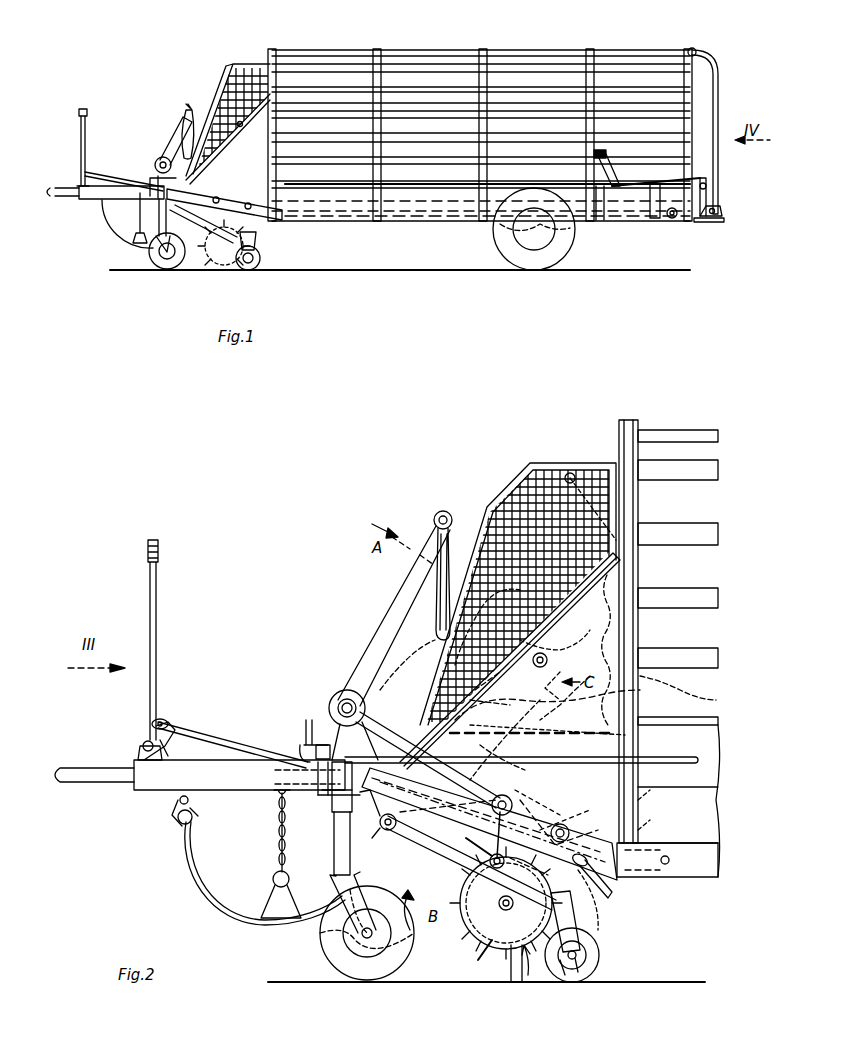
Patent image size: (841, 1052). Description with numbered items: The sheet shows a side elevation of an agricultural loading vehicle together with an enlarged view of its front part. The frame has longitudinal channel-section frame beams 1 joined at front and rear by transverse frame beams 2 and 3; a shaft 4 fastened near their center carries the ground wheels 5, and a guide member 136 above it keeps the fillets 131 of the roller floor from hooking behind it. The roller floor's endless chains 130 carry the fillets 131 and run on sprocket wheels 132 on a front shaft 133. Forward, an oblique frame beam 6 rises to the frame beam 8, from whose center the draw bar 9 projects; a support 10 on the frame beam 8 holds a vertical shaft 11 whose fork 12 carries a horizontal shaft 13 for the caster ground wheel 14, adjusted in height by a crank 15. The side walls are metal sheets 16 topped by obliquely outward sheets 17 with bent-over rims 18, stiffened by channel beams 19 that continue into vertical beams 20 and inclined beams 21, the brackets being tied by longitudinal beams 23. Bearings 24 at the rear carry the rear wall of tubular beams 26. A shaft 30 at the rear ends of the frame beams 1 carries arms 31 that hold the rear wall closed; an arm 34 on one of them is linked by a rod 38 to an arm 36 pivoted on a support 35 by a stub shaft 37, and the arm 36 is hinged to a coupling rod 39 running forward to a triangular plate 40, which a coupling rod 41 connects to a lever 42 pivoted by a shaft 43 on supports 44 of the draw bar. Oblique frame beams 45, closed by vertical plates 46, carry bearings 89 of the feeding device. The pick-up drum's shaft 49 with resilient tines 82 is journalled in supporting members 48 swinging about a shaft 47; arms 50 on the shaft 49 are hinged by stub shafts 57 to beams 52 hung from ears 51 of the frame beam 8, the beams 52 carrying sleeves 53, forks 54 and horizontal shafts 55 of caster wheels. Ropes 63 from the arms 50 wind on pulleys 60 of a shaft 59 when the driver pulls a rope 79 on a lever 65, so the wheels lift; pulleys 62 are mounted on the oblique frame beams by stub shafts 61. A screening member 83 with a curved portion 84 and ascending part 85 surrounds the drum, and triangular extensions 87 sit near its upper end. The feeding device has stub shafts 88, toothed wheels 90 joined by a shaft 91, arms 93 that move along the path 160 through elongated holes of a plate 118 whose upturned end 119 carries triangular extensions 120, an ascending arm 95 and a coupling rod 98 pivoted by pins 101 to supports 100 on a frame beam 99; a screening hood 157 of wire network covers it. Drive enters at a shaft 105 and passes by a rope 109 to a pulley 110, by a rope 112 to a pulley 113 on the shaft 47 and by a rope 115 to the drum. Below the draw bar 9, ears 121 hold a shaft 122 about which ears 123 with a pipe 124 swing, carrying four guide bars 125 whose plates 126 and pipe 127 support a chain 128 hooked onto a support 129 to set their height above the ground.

In FIG. 1, the wagon body 1 is at (362, 222).
In FIG. 2, the wagon body 1 is at (718, 858).
In FIG. 2, the frame member 2 is at (604, 882).
In FIG. 1, the rear frame part 3 is at (712, 224).
In FIG. 1, the axle 4 is at (500, 240).
In FIG. 1, the wagon wheel 5 is at (536, 270).
In FIG. 1, the frame beam 6 is at (266, 222).
In FIG. 2, the frame beam 6 is at (620, 880).
In FIG. 2, the frame bar 8 is at (398, 778).
In FIG. 1, the drawbar 9 is at (122, 200).
In FIG. 2, the drawbar 9 is at (200, 770).
In FIG. 2, the support strut 10 is at (330, 846).
In FIG. 2, the wheel fork 11 is at (334, 870).
In FIG. 2, the wheel axle 12 is at (320, 946).
In FIG. 2, the wheel rim 13 is at (330, 965).
In FIG. 1, the support wheel 14 is at (262, 258).
In FIG. 2, the support wheel 14 is at (368, 980).
In FIG. 2, the coupling 15 is at (300, 722).
In FIG. 2, the side wall 16 is at (700, 812).
In FIG. 2, the side wall member 17 is at (705, 768).
In FIG. 2, the loading floor 18 is at (710, 722).
In FIG. 2, the longitudinal beam 19 is at (640, 746).
In FIG. 2, the front wall post 20 is at (630, 622).
In FIG. 2, the front post 21 is at (618, 432).
In FIG. 2, the side slats 23 is at (706, 465).
In FIG. 1, the rear door pivot 24 is at (695, 47).
In FIG. 1, the rear door frame 26 is at (719, 112).
In FIG. 1, the rear pivot 30 is at (682, 224).
In FIG. 1, the rear latch 31 is at (722, 206).
In FIG. 1, the rear link 34 is at (716, 190).
In FIG. 1, the bracket 35 is at (594, 156).
In FIG. 1, the rear support 36 is at (604, 222).
In FIG. 1, the link 37 is at (609, 160).
In FIG. 1, the rear arm 38 is at (650, 222).
In FIG. 1, the control rod 39 is at (324, 184).
In FIG. 2, the control rod 39 is at (648, 766).
In FIG. 2, the clamp 40 is at (326, 822).
In FIG. 1, the connecting rod 41 is at (130, 178).
In FIG. 2, the connecting rod 41 is at (240, 738).
In FIG. 1, the hand lever 42 is at (82, 150).
In FIG. 2, the hand lever 42 is at (158, 695).
In FIG. 2, the lever pivot 43 is at (142, 742).
In FIG. 2, the lever bracket 44 is at (140, 750).
In FIG. 1, the brace 45 is at (238, 135).
In FIG. 2, the front wall 46 is at (638, 638).
In FIG. 2, the pivot 47 is at (588, 868).
In FIG. 2, the pivot arm 48 is at (592, 896).
In FIG. 2, the pick-up shaft 49 is at (509, 912).
In FIG. 2, the pick-up drum 50 is at (492, 900).
In FIG. 2, the pivot pin 51 is at (374, 830).
In FIG. 2, the pick-up arm 52 is at (414, 855).
In FIG. 2, the gauge wheel fork 53 is at (592, 952).
In FIG. 2, the gauge wheel 54 is at (582, 982).
In FIG. 2, the gauge wheel axle 55 is at (562, 982).
In FIG. 2, the link 57 is at (488, 856).
In FIG. 2, the pivot 59 is at (352, 690).
In FIG. 2, the pivot bearing 60 is at (336, 708).
In FIG. 2, the pivot pin 61 is at (508, 796).
In FIG. 2, the link 62 is at (492, 803).
In FIG. 2, the strut 63 is at (376, 718).
In FIG. 1, the chain link 65 is at (184, 122).
In FIG. 2, the chain link 65 is at (418, 574).
In FIG. 2, the arm 79 is at (396, 630).
In FIG. 2, the guide 82 is at (510, 975).
In FIG. 2, the guide member 83 is at (520, 982).
In FIG. 2, the stripper 84 is at (478, 945).
In FIG. 2, the arm 85 is at (598, 932).
In FIG. 2, the wall portion 87 is at (638, 808).
In FIG. 2, the conveyor element 88 is at (558, 686).
In FIG. 2, the pivot 89 is at (546, 656).
In FIG. 2, the lower slat 90 is at (678, 658).
In FIG. 2, the guide rail 91 is at (556, 624).
In FIG. 2, the conveyor 93 is at (538, 694).
In FIG. 2, the net frame 95 is at (500, 484).
In FIG. 2, the net 98 is at (575, 470).
In FIG. 2, the wall member 99 is at (634, 600).
In FIG. 2, the wall member 100 is at (630, 576).
In FIG. 2, the wall member 101 is at (628, 560).
In FIG. 2, the drawbar coupling 105 is at (270, 776).
In FIG. 2, the arm portion 109 is at (420, 655).
In FIG. 2, the arm portion 110 is at (436, 632).
In FIG. 2, the conveyor path 112 is at (530, 742).
In FIG. 2, the link 113 is at (572, 798).
In FIG. 2, the link 115 is at (560, 862).
In FIG. 2, the conveyor path 118 is at (608, 748).
In FIG. 2, the conveyor path 119 is at (590, 720).
In FIG. 2, the guide 120 is at (660, 680).
In FIG. 2, the pivot 121 is at (172, 806).
In FIG. 2, the bracket 122 is at (176, 824).
In FIG. 2, the pivot pin 123 is at (192, 810).
In FIG. 2, the lug 124 is at (191, 827).
In FIG. 2, the bow 125 is at (196, 890).
In FIG. 2, the weight 126 is at (262, 898).
In FIG. 2, the weight ring 127 is at (272, 878).
In FIG. 2, the chain 128 is at (274, 840).
In FIG. 2, the chain hook 129 is at (274, 800).
In FIG. 2, the frame part 130 is at (704, 880).
In FIG. 2, the frame part 131 is at (702, 828).
In FIG. 2, the frame part 132 is at (672, 878).
In FIG. 2, the pivot 133 is at (682, 858).
In FIG. 1, the lower frame member 136 is at (490, 226).
In FIG. 2, the pivot ring 157 is at (480, 498).
In FIG. 2, the guide 160 is at (704, 695).